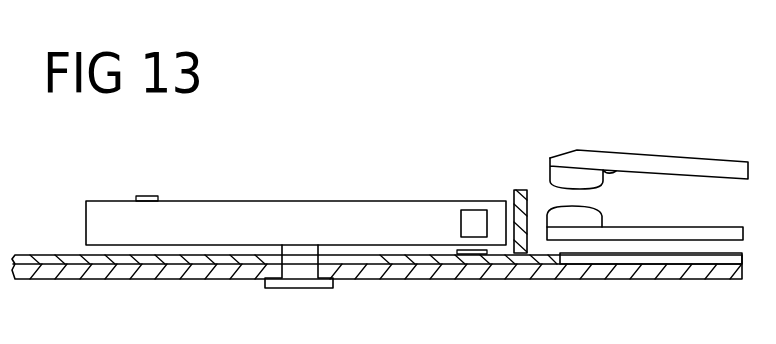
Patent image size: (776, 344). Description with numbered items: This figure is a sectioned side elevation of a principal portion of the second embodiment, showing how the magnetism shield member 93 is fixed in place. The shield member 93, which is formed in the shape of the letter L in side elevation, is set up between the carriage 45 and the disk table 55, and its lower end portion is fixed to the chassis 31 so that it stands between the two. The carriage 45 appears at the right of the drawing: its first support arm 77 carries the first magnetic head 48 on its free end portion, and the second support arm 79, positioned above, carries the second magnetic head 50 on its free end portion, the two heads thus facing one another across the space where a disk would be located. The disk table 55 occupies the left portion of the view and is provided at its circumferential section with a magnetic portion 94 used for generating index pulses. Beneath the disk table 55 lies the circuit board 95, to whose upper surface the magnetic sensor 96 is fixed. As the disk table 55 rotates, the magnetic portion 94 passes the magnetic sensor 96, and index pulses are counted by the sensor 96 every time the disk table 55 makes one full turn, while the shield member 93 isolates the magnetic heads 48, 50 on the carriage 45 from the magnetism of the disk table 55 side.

The circuit board 95 is at (52, 255).
The disk table 55 is at (300, 212).
The magnetic portion 94 is at (470, 209).
The magnetism shield member 93 is at (518, 189).
The carriage 45 is at (649, 126).
The second magnetic head 50 is at (583, 146).
The second support arm 79 is at (679, 157).
The first magnetic head 48 is at (603, 218).
The first support arm 77 is at (708, 237).
The chassis 31 is at (417, 280).
The magnetic sensor 96 is at (472, 255).